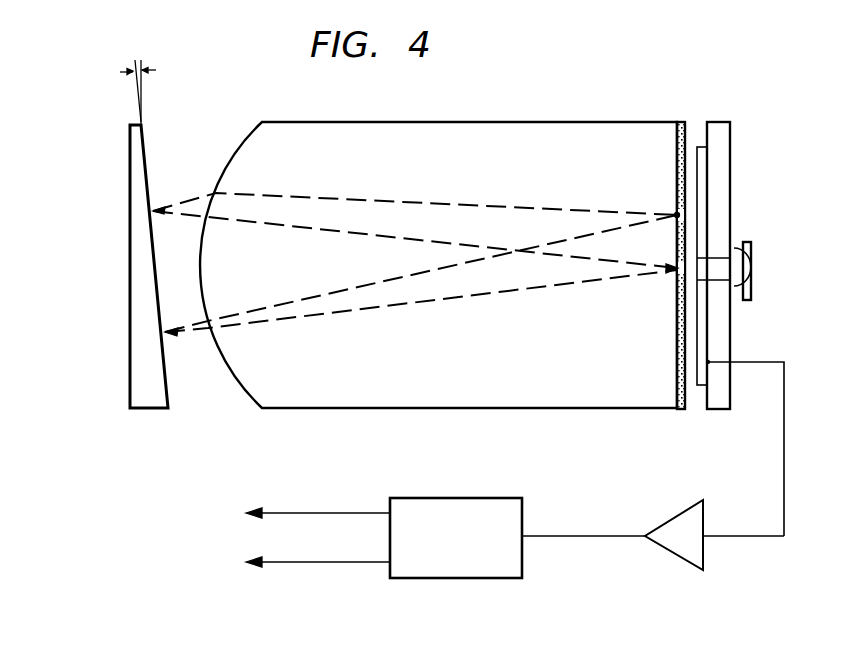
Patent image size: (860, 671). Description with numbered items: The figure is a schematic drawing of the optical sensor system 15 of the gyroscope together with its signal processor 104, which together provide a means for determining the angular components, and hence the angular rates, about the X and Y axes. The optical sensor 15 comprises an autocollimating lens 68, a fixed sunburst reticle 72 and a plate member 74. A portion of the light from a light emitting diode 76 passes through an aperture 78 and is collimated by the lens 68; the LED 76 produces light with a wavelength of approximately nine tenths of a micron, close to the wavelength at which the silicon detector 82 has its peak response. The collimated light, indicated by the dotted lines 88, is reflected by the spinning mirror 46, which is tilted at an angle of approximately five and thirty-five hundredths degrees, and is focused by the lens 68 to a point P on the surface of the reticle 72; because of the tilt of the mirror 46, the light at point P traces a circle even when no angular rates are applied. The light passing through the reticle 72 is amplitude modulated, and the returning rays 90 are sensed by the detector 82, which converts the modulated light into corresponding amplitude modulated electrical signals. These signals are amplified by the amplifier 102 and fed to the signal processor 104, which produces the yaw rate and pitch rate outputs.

The optical sensor system 15 is at (495, 78).
The spinning mirror 46 is at (137, 378).
The autocollimating lens 68 is at (502, 128).
The fixed sunburst reticle 72 is at (681, 121).
The plate member 74 is at (722, 122).
The light emitting diode 76 is at (752, 270).
The aperture 78 is at (720, 263).
The silicon detector 82 is at (702, 193).
The collimated light 88 is at (430, 238).
The light rays 90 is at (421, 196).
The amplifier 102 is at (686, 546).
The signal processor 104 is at (497, 569).